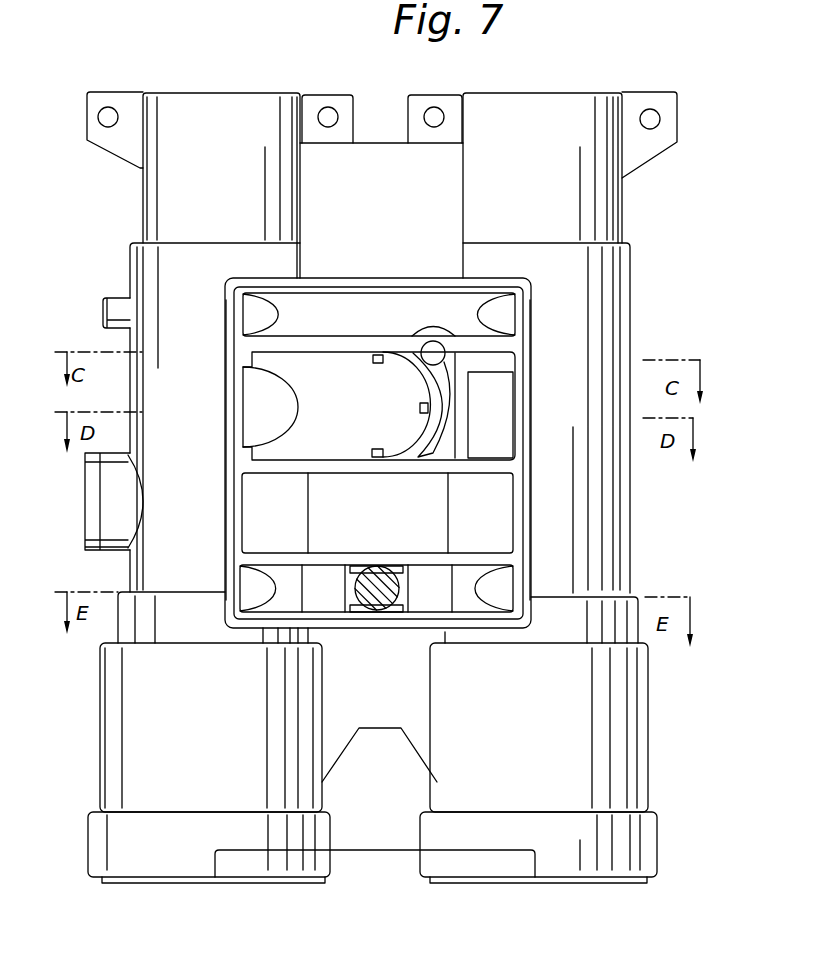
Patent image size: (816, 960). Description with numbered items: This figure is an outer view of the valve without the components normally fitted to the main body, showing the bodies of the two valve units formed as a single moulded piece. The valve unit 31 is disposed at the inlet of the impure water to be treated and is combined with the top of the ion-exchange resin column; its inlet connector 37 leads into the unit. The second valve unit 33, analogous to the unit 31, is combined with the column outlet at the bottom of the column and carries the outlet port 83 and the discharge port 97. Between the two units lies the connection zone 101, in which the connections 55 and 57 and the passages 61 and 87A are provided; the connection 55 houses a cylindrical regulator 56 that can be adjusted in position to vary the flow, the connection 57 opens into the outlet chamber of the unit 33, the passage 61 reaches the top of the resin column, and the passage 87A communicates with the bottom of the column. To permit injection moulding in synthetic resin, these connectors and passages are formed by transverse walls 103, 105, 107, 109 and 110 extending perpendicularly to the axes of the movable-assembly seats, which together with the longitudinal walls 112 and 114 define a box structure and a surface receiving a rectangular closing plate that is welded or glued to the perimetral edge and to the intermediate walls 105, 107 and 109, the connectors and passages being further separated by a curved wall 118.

The valve unit 31 is at (623, 280).
The second valve unit 33 is at (135, 265).
The inlet connector 37 is at (610, 198).
The connection 55 is at (327, 592).
The cylindrical regulator 56 is at (392, 602).
The connection 57 is at (378, 329).
The passage 61 is at (507, 362).
The outlet port 83 is at (265, 115).
The passage 87A is at (287, 420).
The discharge port 97 is at (95, 510).
The connection zone 101 is at (367, 150).
The transverse wall 103 is at (367, 280).
The transverse wall 105 is at (334, 346).
The transverse wall 107 is at (320, 465).
The transverse wall 109 is at (273, 557).
The transverse wall 110 is at (278, 623).
The longitudinal wall 112 is at (527, 515).
The longitudinal wall 114 is at (223, 447).
The curved wall 118 is at (438, 452).